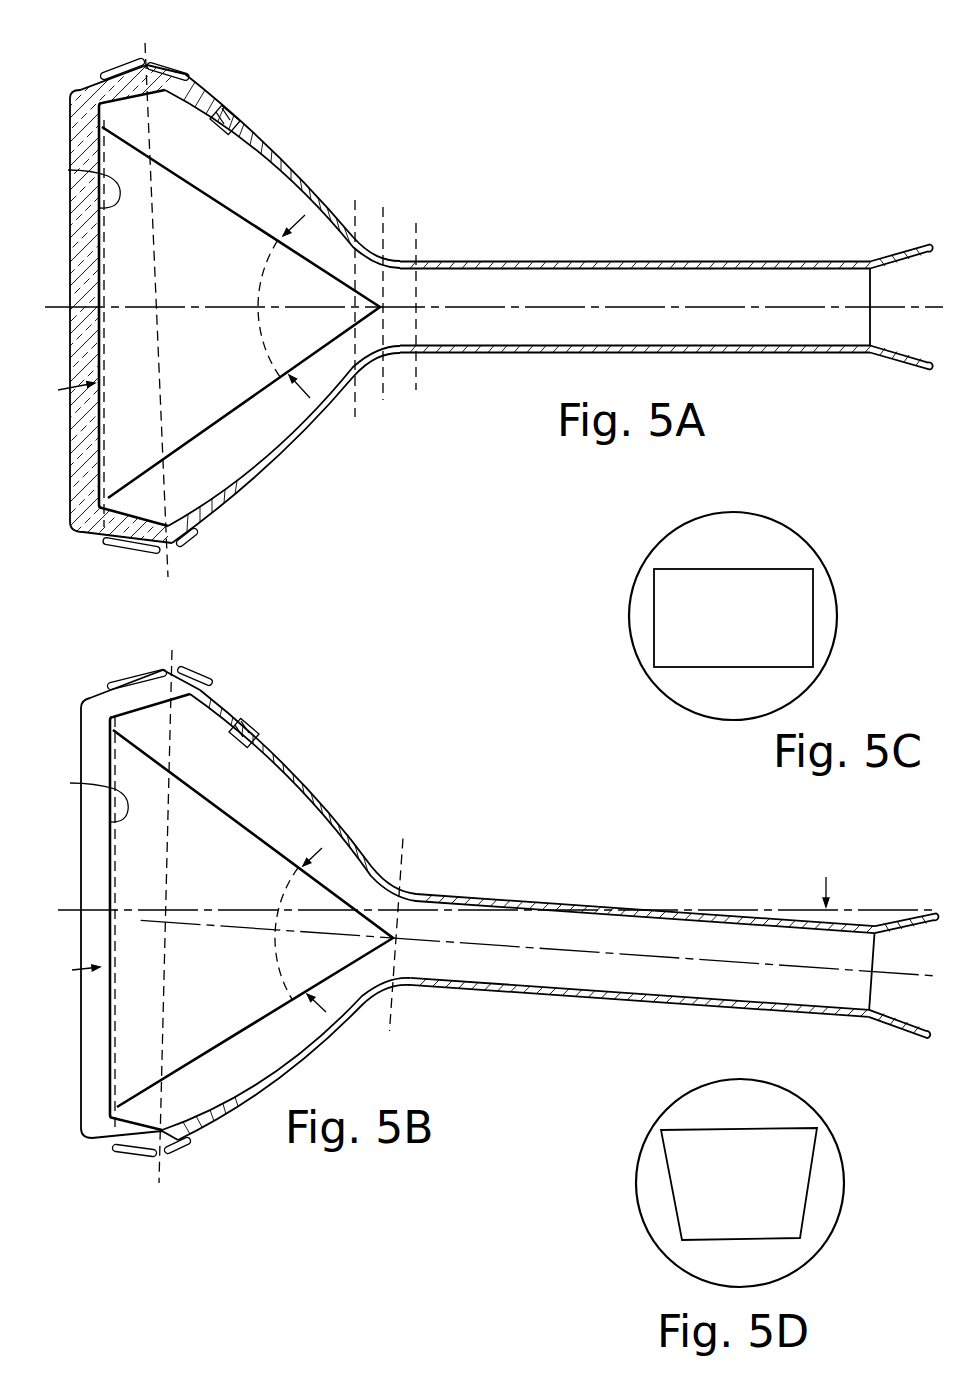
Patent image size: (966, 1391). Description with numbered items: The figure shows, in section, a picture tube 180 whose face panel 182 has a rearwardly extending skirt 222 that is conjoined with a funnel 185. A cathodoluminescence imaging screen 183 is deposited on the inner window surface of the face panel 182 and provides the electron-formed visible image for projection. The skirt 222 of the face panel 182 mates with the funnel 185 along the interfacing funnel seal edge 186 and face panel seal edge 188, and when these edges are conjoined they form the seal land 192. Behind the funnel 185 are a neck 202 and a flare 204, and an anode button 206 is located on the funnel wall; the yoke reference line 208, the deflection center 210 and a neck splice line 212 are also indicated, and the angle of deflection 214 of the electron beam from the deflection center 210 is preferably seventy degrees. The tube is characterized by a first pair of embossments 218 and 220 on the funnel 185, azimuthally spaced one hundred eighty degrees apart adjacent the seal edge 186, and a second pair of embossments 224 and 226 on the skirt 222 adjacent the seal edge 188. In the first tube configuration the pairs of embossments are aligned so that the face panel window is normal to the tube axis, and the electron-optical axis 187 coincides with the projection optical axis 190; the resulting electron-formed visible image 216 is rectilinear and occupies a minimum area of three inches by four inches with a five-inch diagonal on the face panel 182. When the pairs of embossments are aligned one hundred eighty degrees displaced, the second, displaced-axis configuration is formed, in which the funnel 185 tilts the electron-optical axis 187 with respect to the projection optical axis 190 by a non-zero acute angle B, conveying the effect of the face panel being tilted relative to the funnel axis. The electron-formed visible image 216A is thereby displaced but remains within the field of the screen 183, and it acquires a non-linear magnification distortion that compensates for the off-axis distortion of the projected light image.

In FIG. 5A, the picture tube 180 is at (549, 306).
In FIG. 5B, the picture tube 180 is at (538, 915).
In FIG. 5A, the face panel 182 is at (70, 128).
In FIG. 5B, the face panel 182 is at (80, 724).
In FIG. 5C, the face panel 182 is at (640, 570).
In FIG. 5D, the face panel 182 is at (640, 1156).
In FIG. 5A, the cathodoluminescence imaging screen 183 is at (70, 183).
In FIG. 5B, the cathodoluminescence imaging screen 183 is at (80, 796).
In FIG. 5A, the funnel 185 is at (277, 156).
In FIG. 5B, the funnel 185 is at (310, 775).
In FIG. 5A, the funnel seal edge 186 is at (147, 117).
In FIG. 5B, the electron-optical axis 187 is at (820, 970).
In FIG. 5A, the face panel seal edge 188 is at (172, 545).
In FIG. 5A, the projection optical axis 190 is at (578, 303).
In FIG. 5B, the projection optical axis 190 is at (770, 908).
In FIG. 5A, the seal land 192 is at (160, 382).
In FIG. 5B, the seal land 192 is at (165, 968).
In FIG. 5A, the neck 202 is at (635, 274).
In FIG. 5A, the flare 204 is at (890, 276).
In FIG. 5A, the anode button 206 is at (228, 112).
In FIG. 5A, the yoke reference line 208 is at (357, 402).
In FIG. 5A, the deflection center 210 is at (384, 236).
In FIG. 5B, the deflection center 210 is at (393, 1000).
In FIG. 5A, the neck splice line 212 is at (417, 367).
In FIG. 5A, the angle of deflection 214 is at (262, 266).
In FIG. 5B, the angle of deflection 214 is at (282, 883).
In FIG. 5A, the electron-formed visible image 216 is at (56, 392).
In FIG. 5C, the electron-formed visible image 216 is at (752, 620).
In FIG. 5B, the electron-formed visible image 216A is at (59, 972).
In FIG. 5D, the electron-formed visible image 216A is at (774, 1195).
In FIG. 5A, the embossment 218 is at (172, 62).
In FIG. 5A, the embossment 220 is at (192, 546).
In FIG. 5A, the skirt 222 is at (86, 84).
In FIG. 5A, the embossment 224 is at (106, 70).
In FIG. 5A, the embossment 226 is at (130, 550).
In FIG. 5B, the angle B is at (825, 877).